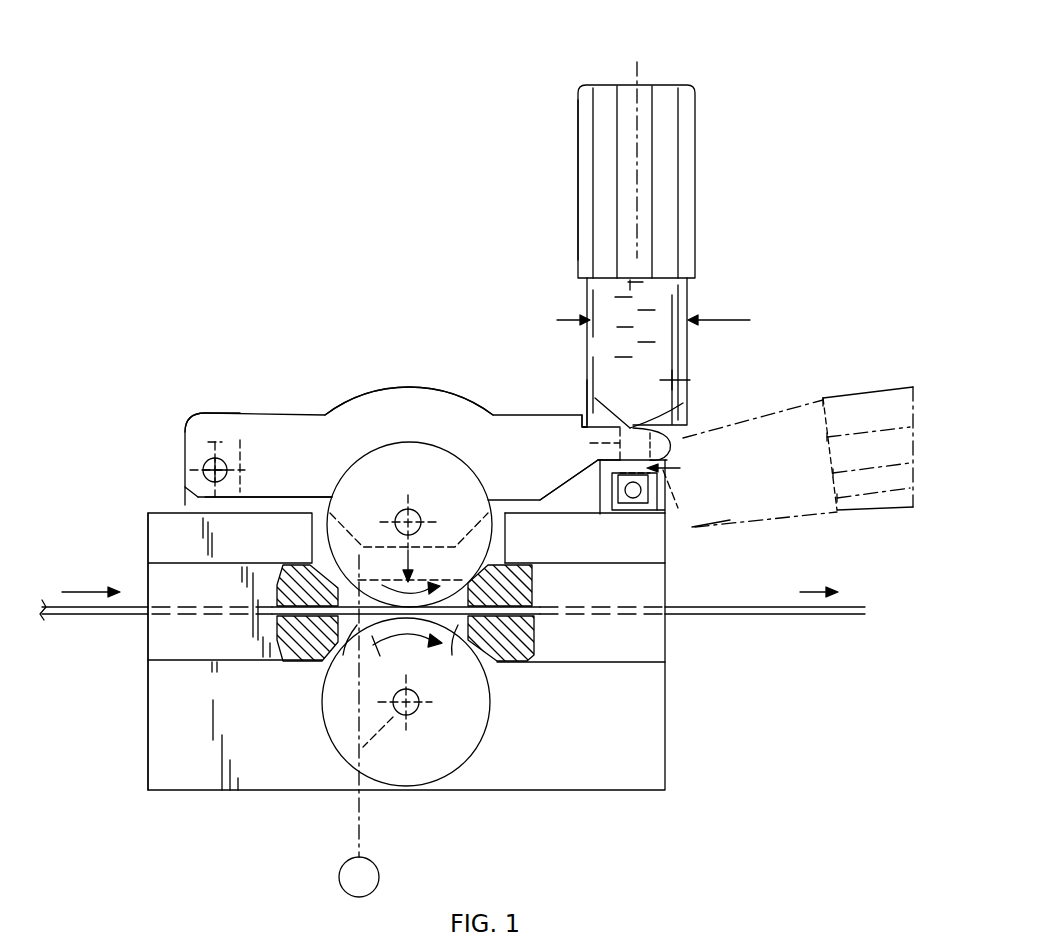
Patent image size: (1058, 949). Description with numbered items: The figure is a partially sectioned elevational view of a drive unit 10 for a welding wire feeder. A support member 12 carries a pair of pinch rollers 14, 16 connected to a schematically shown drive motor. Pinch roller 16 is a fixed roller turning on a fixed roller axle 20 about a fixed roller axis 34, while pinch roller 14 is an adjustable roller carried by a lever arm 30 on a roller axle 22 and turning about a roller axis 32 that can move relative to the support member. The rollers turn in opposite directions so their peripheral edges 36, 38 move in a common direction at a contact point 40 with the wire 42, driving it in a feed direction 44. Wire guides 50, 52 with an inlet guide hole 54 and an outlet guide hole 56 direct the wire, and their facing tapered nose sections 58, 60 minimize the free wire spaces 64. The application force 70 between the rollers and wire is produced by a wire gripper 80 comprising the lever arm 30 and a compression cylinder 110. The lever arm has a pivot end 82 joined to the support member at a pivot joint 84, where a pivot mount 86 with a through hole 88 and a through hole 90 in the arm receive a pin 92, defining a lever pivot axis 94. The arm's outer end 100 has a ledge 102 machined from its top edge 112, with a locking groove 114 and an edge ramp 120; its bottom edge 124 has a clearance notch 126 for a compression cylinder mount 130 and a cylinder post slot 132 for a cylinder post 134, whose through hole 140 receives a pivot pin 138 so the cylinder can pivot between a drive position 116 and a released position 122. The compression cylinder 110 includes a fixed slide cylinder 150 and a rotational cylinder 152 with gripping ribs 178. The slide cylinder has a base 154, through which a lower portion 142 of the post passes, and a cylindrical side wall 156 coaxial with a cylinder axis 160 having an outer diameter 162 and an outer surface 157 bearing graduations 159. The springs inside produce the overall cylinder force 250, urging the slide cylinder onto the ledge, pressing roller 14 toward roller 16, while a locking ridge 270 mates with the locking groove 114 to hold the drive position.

The drive unit 10 is at (136, 270).
The support member 12 is at (157, 738).
The pinch roller 14 is at (390, 430).
The pinch roller 16 is at (495, 740).
The fixed roller axle 20 is at (412, 712).
The roller axle 22 is at (412, 510).
The lever arm 30 is at (397, 372).
The roller axis 32 is at (395, 510).
The fixed roller axis 34 is at (412, 708).
The peripheral edge 36 is at (343, 480).
The peripheral edge 38 is at (330, 740).
The contact point 40 is at (381, 660).
The wire 42 is at (68, 614).
The feed direction 44 is at (85, 590).
The wire guide 50 is at (163, 636).
The wire guide 52 is at (637, 647).
The inlet guide hole 54 is at (263, 630).
The outlet guide hole 56 is at (533, 655).
The tapered nose section 58 is at (327, 673).
The tapered nose section 60 is at (485, 650).
The free wire spaces 64 is at (350, 640).
The application force 70 is at (430, 552).
The wire gripper 80 is at (335, 390).
The pivot end 82 is at (227, 412).
The pivot joint 84 is at (195, 440).
The pivot mount 86 is at (186, 505).
The through hole 88 is at (222, 460).
The through hole 90 is at (203, 470).
The pin 92 is at (190, 480).
The lever pivot axis 94 is at (218, 480).
The outer end 100 is at (568, 408).
The ledge 102 is at (587, 383).
The compression cylinder 110 is at (648, 219).
The top edge 112 is at (498, 413).
The locking groove 114 is at (637, 427).
The drive position 116 is at (596, 68).
The edge ramp 120 is at (680, 432).
The released position 122 is at (870, 380).
The bottom edge 124 is at (537, 500).
The clearance notch 126 is at (600, 515).
The compression cylinder mount 130 is at (645, 512).
The cylinder post slot 132 is at (580, 445).
The cylinder post 134 is at (680, 468).
The pivot pin 138 is at (700, 512).
The through hole 140 is at (635, 498).
The lower portion 142 is at (657, 478).
The fixed slide cylinder 150 is at (700, 297).
The rotational cylinder 152 is at (702, 154).
The base 154 is at (603, 430).
The cylindrical side wall 156 is at (584, 286).
The outer surface 157 is at (690, 380).
The graduations 159 is at (655, 325).
The cylinder axis 160 is at (640, 73).
The outer diameter 162 is at (735, 323).
The gripping ribs 178 is at (578, 125).
The overall cylinder force 250 is at (565, 460).
The locking ridge 270 is at (668, 452).